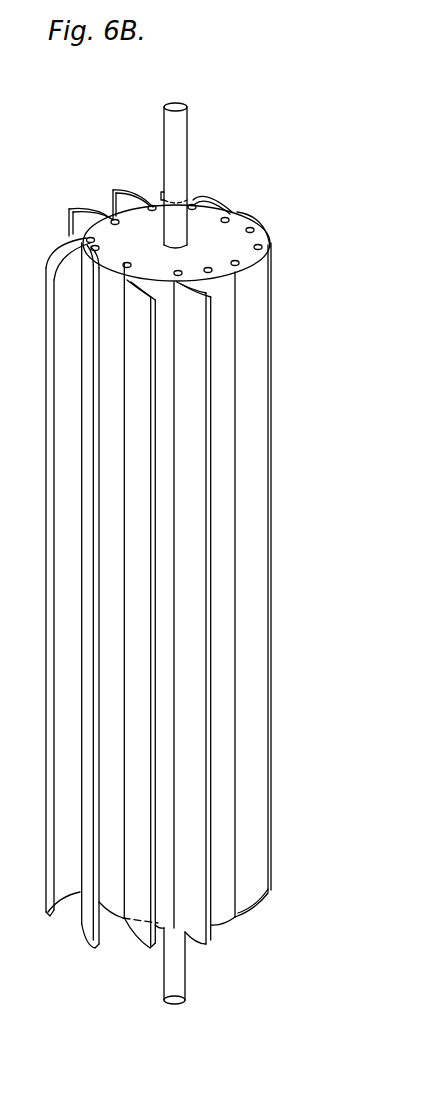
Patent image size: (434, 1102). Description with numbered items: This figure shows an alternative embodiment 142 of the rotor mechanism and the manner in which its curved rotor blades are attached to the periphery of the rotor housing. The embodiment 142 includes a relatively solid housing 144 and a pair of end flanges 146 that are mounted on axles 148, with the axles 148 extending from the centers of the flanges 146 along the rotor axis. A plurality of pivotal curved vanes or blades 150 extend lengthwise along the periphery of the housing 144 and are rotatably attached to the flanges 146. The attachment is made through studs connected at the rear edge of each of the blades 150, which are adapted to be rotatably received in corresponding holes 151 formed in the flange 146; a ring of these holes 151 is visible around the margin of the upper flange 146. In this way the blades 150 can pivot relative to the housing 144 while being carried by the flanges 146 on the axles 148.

The rotor mechanism embodiment 142 is at (290, 419).
The housing 144 is at (112, 898).
The end flange 146 is at (205, 220).
The axle 148 is at (185, 135).
The pivotal curved vane 150 is at (82, 920).
The hole 151 is at (238, 206).